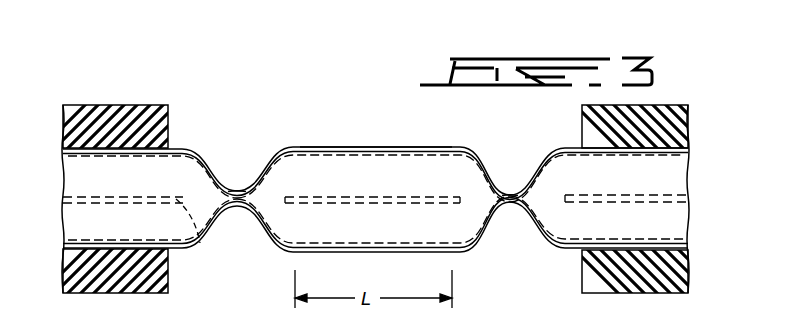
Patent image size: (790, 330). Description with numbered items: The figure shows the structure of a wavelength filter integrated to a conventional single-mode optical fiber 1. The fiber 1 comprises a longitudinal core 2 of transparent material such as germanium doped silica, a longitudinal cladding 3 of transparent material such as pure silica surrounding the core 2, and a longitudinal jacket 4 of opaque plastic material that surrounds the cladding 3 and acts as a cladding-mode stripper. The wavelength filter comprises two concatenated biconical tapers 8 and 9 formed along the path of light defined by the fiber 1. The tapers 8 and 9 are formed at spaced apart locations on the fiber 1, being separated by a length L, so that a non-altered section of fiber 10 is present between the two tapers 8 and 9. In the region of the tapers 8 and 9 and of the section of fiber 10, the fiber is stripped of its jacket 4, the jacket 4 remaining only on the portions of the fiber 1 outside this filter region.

The single-mode optical fiber 1 is at (684, 90).
The core 2 is at (200, 243).
The cladding 3 is at (678, 217).
The jacket 4 is at (150, 113).
The biconical taper 8 is at (240, 186).
The biconical taper 9 is at (517, 184).
The non-altered section of fiber 10 is at (367, 146).